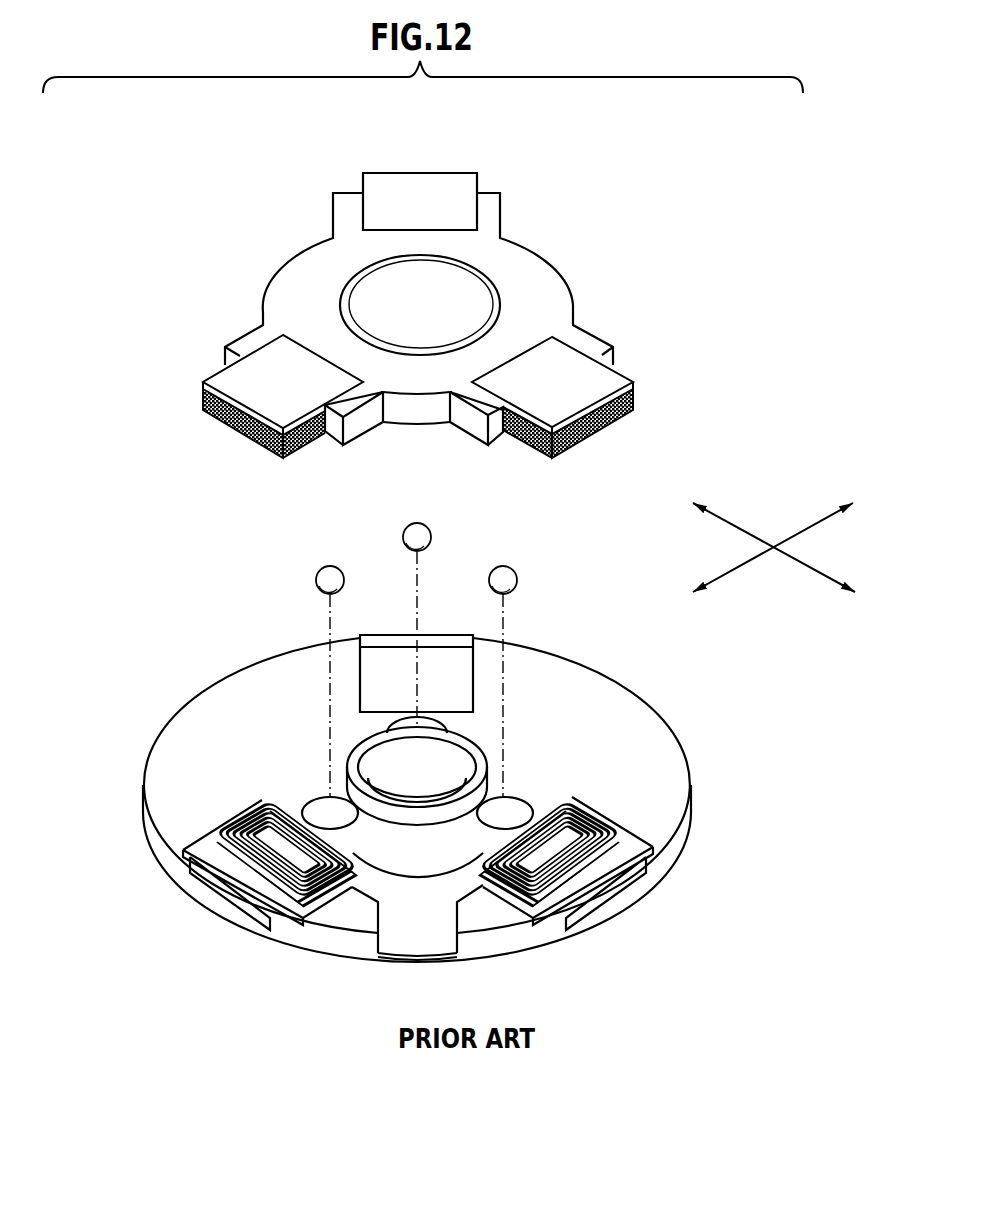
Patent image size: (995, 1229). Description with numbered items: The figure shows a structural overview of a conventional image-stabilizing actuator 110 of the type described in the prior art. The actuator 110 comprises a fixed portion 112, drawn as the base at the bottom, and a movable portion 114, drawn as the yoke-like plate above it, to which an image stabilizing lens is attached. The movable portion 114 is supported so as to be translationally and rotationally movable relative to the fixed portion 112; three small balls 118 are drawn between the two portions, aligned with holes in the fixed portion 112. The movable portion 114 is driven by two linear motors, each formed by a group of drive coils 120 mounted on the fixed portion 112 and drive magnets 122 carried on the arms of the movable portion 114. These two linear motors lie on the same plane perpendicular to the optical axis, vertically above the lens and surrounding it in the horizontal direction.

The actuator 110 is at (133, 458).
The fixed portion 112 is at (640, 675).
The movable portion 114 is at (572, 270).
The balls 118 is at (427, 532).
The drive coils 120 is at (185, 867).
The drive magnets 122 is at (217, 420).